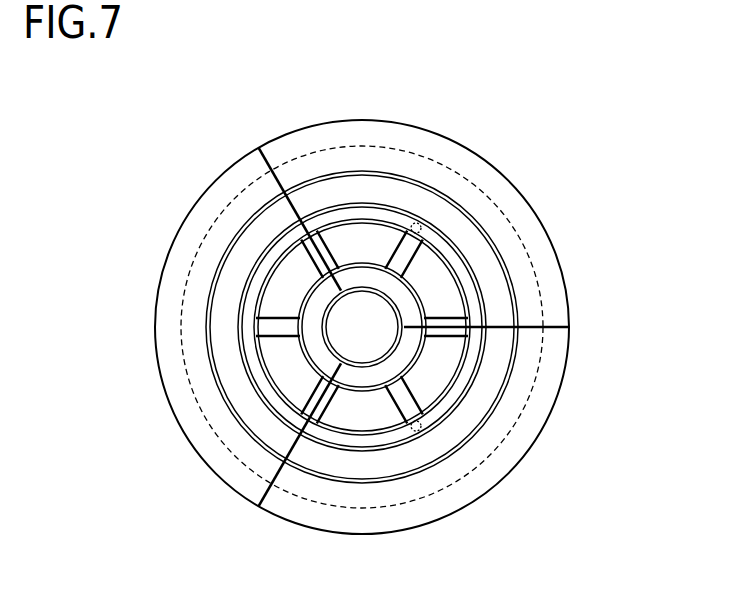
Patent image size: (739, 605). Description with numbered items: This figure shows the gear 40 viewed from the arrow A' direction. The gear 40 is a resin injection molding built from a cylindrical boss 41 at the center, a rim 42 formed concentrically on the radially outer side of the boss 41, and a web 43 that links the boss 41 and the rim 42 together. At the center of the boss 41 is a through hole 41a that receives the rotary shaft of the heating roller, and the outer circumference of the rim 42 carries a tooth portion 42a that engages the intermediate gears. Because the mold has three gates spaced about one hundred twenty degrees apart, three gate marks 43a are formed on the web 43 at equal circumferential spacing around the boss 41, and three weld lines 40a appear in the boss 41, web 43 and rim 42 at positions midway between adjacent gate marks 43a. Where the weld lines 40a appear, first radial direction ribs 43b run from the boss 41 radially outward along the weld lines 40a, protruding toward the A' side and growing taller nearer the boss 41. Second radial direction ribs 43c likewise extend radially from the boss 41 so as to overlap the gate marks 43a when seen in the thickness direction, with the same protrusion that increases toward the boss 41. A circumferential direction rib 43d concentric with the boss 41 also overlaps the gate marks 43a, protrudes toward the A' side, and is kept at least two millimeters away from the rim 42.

The gear 40 is at (608, 108).
The weld lines 40a is at (268, 162).
The cylindrical boss 41 is at (366, 275).
The through hole 41a is at (357, 323).
The rim 42 is at (512, 248).
The tooth portion 42a is at (547, 385).
The web 43 is at (437, 370).
The gate marks 43a is at (413, 227).
The first radial direction ribs 43b is at (310, 262).
The second radial direction ribs 43c is at (393, 242).
The circumferential direction rib 43d is at (457, 242).